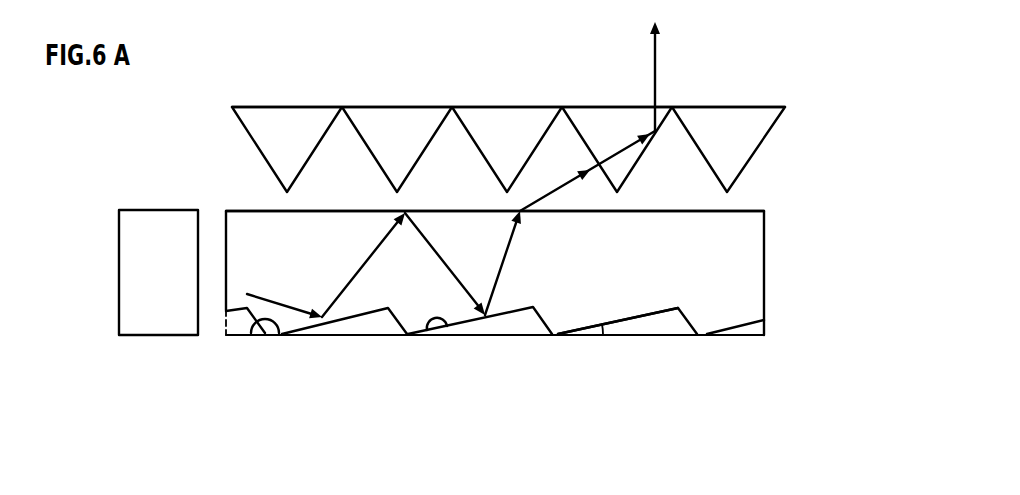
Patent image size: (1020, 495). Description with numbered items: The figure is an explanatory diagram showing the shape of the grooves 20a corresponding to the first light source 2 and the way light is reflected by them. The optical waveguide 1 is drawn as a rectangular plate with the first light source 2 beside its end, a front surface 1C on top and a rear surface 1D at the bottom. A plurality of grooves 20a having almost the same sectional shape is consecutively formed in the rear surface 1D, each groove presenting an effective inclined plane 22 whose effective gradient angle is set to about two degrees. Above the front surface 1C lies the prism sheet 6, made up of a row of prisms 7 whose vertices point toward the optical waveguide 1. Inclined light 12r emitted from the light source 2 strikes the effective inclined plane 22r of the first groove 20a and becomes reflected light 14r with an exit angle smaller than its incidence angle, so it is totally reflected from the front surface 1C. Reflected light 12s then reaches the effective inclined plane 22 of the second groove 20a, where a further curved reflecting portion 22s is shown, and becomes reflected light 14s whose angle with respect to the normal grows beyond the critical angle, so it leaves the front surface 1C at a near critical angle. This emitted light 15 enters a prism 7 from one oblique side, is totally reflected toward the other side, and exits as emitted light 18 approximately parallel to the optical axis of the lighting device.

The optical waveguide 1 is at (765, 268).
The front surface of optical waveguide 1C is at (745, 208).
The rear surface of optical waveguide 1D is at (733, 337).
The first light source 2 is at (153, 210).
The prism sheet 6 is at (790, 140).
The prism 7 is at (600, 112).
The inclined light 12r is at (285, 302).
The reflected light 12s is at (450, 262).
The reflected light 14r is at (367, 270).
The reflected light 14s is at (507, 265).
The emitted light 15 is at (570, 183).
The emitted light 18 is at (655, 58).
The groove 20a is at (331, 352).
The effective inclined plane 22 is at (648, 313).
The effective inclined plane 22r is at (243, 334).
The curved reflecting portion 22s is at (427, 335).